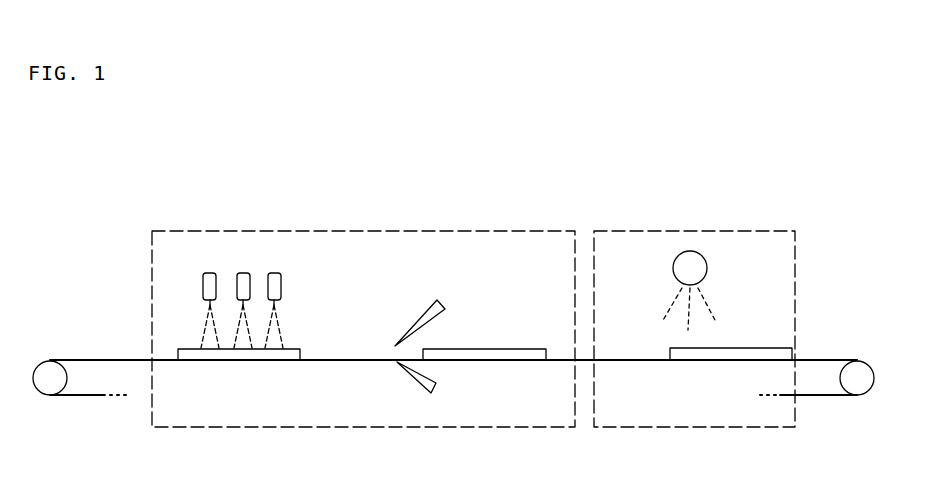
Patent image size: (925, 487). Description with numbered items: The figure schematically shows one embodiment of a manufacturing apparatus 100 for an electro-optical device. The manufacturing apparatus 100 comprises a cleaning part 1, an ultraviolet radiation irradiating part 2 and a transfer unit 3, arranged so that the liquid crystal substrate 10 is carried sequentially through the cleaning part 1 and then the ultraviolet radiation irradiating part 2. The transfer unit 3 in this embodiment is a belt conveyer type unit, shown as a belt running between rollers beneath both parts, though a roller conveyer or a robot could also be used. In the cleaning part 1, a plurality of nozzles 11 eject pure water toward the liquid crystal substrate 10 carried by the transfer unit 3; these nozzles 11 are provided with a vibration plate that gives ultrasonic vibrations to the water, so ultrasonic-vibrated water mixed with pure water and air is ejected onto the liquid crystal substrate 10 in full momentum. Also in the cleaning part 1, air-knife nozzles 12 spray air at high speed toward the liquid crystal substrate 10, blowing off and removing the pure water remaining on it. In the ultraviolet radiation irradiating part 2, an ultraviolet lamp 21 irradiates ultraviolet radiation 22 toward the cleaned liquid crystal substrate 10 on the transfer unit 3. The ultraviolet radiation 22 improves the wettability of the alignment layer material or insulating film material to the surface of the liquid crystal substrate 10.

The manufacturing apparatus 100 is at (799, 201).
The cleaning part 1 is at (425, 231).
The ultraviolet radiation irradiating part 2 is at (637, 230).
The transfer unit 3 is at (46, 350).
The liquid crystal substrate 10 is at (300, 349).
The nozzles 11 is at (273, 273).
The air-knife nozzles 12 is at (443, 307).
The ultraviolet lamp 21 is at (692, 251).
The ultraviolet radiation 22 is at (672, 306).